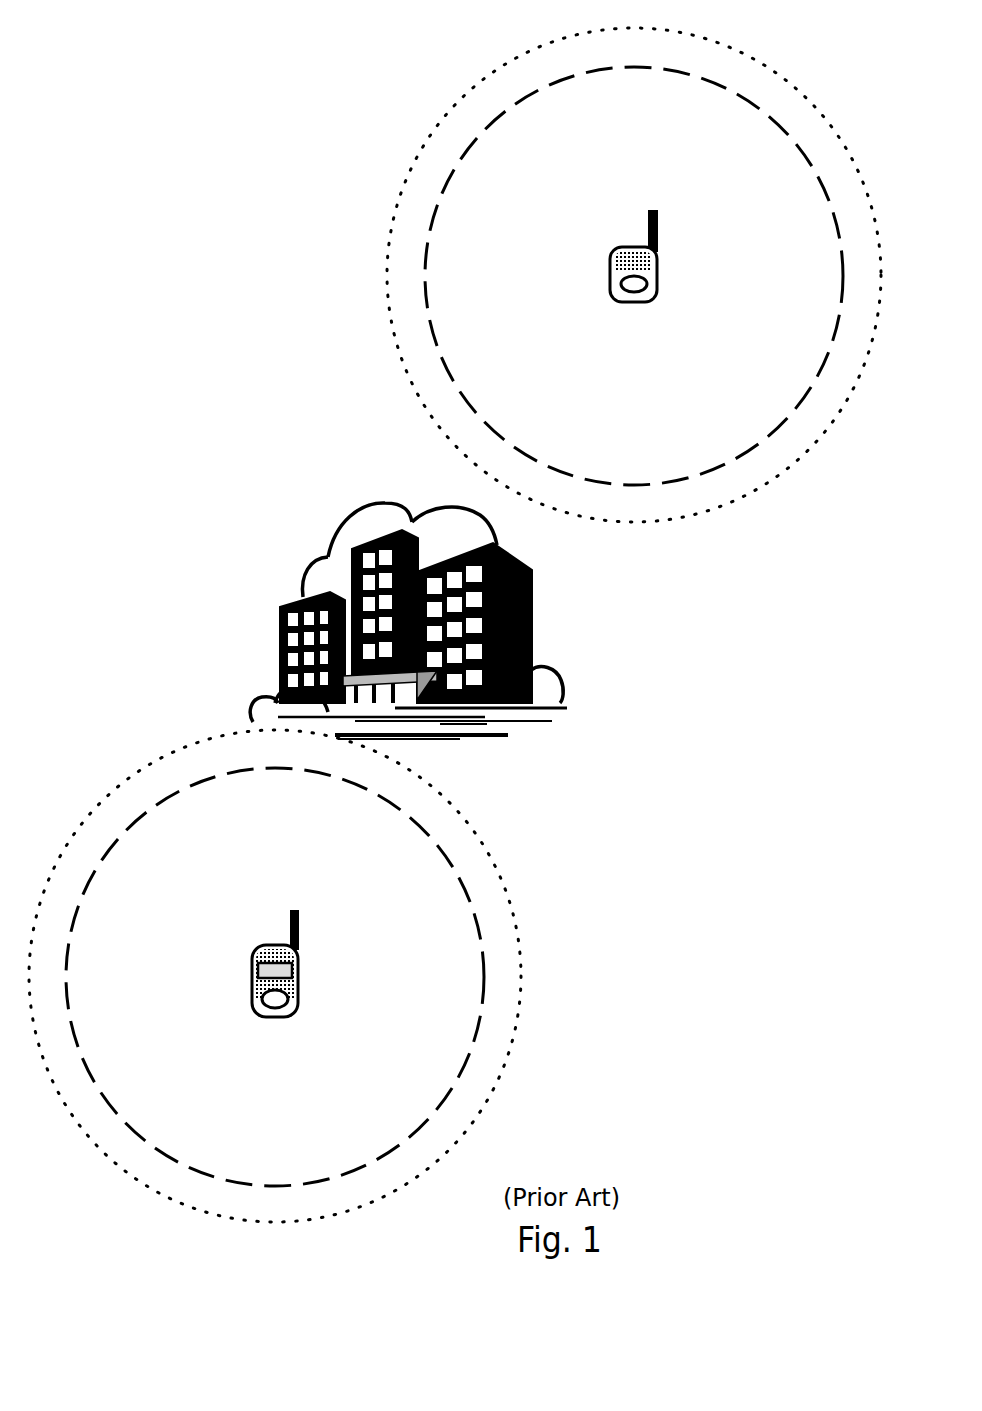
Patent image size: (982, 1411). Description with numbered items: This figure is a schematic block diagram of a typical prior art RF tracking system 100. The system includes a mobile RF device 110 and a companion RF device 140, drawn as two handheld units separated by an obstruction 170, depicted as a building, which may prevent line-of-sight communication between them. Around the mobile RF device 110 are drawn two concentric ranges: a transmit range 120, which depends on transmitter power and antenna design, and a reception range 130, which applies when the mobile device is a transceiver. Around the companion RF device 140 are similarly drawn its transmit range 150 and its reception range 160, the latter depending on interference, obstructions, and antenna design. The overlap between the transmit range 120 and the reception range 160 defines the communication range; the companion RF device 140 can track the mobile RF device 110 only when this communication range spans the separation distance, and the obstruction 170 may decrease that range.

The RF tracking system 100 is at (160, 160).
The mobile RF device 110 is at (660, 235).
The transmit range 120 is at (781, 123).
The reception range 130 is at (770, 65).
The companion RF device 140 is at (300, 924).
The transmit range 150 is at (462, 880).
The reception range 160 is at (470, 818).
The obstruction 170 is at (508, 552).